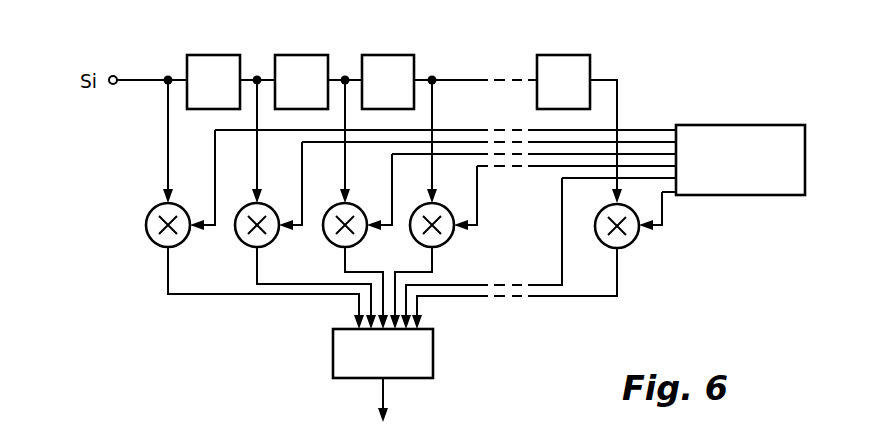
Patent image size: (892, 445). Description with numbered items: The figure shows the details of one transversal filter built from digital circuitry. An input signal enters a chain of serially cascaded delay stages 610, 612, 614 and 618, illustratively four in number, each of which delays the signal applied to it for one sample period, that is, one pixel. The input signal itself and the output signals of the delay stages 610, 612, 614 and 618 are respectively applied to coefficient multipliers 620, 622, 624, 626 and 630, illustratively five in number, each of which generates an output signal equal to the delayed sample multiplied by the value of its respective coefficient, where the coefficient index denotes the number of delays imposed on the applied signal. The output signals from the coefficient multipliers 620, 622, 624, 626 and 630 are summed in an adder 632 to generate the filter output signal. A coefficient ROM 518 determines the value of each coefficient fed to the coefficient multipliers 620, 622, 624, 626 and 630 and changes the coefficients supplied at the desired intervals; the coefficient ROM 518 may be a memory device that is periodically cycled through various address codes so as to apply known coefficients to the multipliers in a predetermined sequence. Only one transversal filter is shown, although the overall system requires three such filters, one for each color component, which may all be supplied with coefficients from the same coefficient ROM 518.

The delay stage 610 is at (216, 55).
The delay stage 612 is at (303, 55).
The delay stage 614 is at (389, 55).
The delay stage 618 is at (563, 55).
The coefficient ROM 518 is at (742, 195).
The coefficient multiplier 620 is at (163, 243).
The coefficient multiplier 622 is at (248, 243).
The coefficient multiplier 624 is at (336, 243).
The coefficient multiplier 626 is at (443, 243).
The coefficient multiplier 630 is at (628, 245).
The adder 632 is at (433, 355).